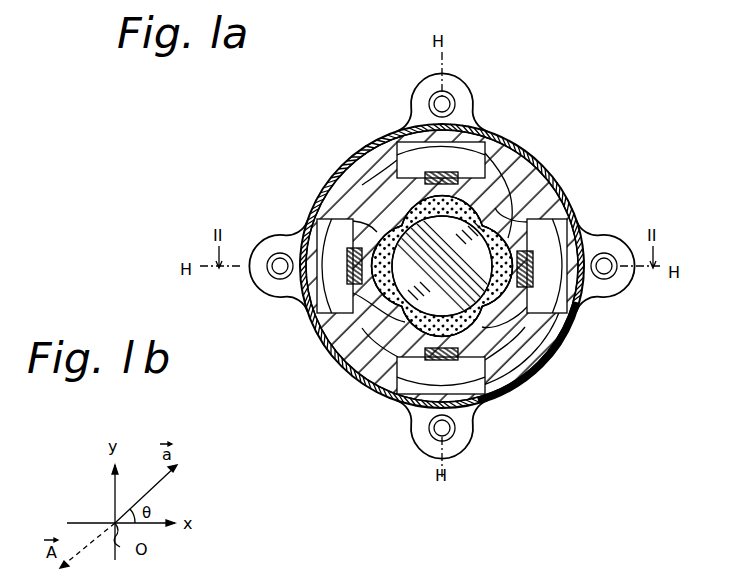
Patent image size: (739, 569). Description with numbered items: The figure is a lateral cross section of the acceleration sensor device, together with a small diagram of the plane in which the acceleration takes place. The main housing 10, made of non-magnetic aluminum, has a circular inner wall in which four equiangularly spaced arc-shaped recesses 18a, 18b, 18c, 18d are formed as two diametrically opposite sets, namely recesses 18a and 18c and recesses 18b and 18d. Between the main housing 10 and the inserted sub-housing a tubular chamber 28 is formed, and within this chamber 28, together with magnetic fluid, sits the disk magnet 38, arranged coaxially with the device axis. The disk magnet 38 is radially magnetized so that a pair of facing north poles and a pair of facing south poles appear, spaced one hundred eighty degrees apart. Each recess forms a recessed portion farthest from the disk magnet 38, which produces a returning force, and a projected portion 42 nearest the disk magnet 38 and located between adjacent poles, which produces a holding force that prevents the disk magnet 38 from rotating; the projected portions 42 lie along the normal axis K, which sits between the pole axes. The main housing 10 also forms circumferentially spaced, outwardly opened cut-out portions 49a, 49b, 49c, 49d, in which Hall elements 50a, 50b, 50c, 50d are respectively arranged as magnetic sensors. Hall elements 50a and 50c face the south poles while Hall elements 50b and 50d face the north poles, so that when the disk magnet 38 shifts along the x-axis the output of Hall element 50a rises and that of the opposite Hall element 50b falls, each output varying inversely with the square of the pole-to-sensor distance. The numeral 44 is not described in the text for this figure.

The main housing 10 is at (523, 197).
The tubular chamber 28 is at (545, 224).
The normal axis K— K is at (358, 178).
The recess 18a is at (543, 347).
The recess 18b is at (412, 198).
The recess 18c is at (320, 330).
The recess 18d is at (398, 386).
The projected portion 42 is at (511, 210).
The cut-out portion 49a is at (552, 260).
The cut-out portion 49b is at (417, 158).
The cut-out portion 49c is at (335, 250).
The cut-out portion 49d is at (420, 372).
The Hall element 50a is at (602, 307).
The Hall element 50b is at (448, 168).
The Hall element 50c is at (281, 298).
The Hall element 50d is at (515, 363).
The disk magnet 38 is at (337, 330).
The motor 44 is at (390, 564).